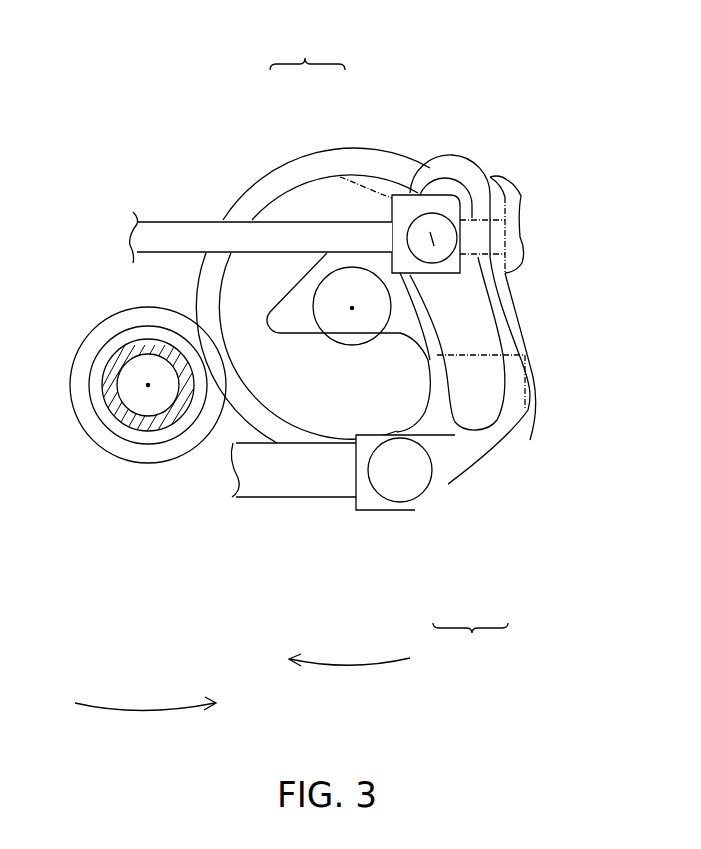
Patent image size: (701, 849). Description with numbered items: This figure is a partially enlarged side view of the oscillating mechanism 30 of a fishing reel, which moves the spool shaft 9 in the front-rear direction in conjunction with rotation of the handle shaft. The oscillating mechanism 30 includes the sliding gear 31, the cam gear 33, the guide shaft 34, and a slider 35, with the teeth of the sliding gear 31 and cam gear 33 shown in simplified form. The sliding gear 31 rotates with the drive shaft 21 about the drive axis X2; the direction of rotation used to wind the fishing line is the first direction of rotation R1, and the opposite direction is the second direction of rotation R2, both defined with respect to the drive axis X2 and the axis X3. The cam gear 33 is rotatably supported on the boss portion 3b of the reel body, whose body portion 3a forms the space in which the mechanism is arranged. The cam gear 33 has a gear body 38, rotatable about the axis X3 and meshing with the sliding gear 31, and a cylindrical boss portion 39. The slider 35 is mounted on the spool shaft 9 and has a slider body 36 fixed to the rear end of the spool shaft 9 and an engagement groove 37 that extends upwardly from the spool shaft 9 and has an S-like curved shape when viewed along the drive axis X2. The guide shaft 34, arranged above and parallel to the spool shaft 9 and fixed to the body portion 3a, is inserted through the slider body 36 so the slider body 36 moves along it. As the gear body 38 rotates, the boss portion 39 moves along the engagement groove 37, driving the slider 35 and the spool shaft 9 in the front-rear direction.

The oscillating mechanism 30 is at (410, 80).
The cam gear 33 is at (307, 51).
The gear body 38 is at (302, 152).
The boss portion 39 is at (340, 177).
The body portion 3a is at (518, 197).
The boss portion 3b is at (348, 333).
The guide shaft 34 is at (170, 235).
The sliding gear 31 is at (85, 354).
The drive shaft 21 is at (110, 413).
The spool shaft 9 is at (296, 473).
The slider 35 is at (470, 640).
The slider body 36 is at (452, 460).
The engagement groove 37 is at (533, 442).
The drive axis X2 is at (148, 388).
The axis X3 is at (352, 306).
The first direction of rotation R1 is at (145, 719).
The second direction of rotation R2 is at (349, 674).